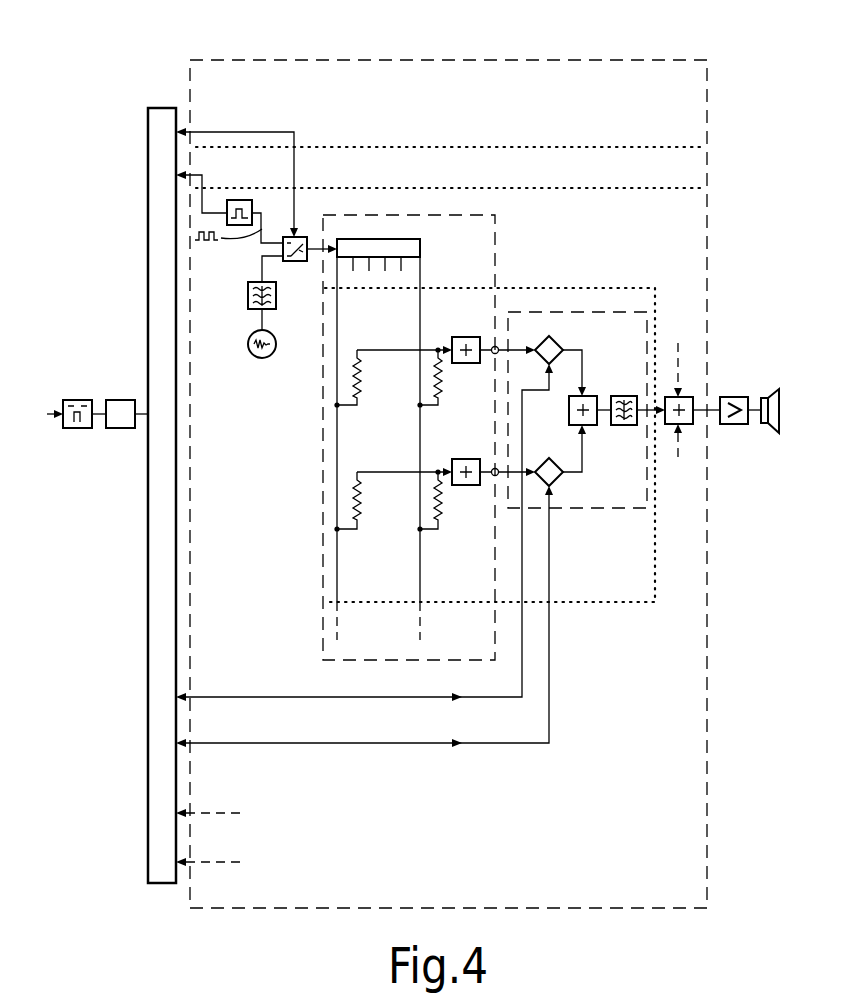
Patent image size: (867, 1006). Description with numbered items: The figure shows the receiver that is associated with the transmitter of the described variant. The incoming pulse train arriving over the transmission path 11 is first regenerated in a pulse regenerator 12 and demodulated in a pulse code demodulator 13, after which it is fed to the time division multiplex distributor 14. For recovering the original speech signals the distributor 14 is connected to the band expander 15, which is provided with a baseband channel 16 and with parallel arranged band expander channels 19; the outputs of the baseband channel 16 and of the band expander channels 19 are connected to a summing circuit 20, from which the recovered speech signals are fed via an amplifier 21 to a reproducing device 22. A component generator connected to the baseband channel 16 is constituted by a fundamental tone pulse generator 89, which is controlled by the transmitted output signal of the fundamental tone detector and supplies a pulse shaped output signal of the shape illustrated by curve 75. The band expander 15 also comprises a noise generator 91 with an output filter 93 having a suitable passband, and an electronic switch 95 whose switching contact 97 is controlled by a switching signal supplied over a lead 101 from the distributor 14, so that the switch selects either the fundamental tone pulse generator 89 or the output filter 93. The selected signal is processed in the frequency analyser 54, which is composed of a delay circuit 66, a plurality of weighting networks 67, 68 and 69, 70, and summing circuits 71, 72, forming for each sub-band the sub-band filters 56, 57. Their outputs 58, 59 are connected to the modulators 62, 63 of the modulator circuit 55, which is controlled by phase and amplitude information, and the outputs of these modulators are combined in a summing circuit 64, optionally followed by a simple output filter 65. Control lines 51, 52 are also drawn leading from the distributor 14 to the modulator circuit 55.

The transmission path 11 is at (58, 408).
The pulse regenerator 12 is at (80, 399).
The pulse code demodulator 13 is at (122, 399).
The time division multiplex distributor 14 is at (147, 122).
The band expander 15 is at (568, 57).
The baseband channel 16 is at (602, 175).
The band expander channels 19 is at (590, 287).
The summing circuit 20 is at (688, 395).
The amplifier 21 is at (732, 396).
The reproducing device 22 is at (770, 396).
The control line 51 is at (273, 696).
The control line 52 is at (273, 742).
The frequency analyser 54 is at (498, 238).
The modulator circuit 55 is at (628, 509).
The sub-band filter 56 is at (368, 454).
The sub-band filter 57 is at (368, 570).
The output 58 is at (493, 345).
The output 59 is at (493, 478).
The modulator 62 is at (561, 341).
The modulator 63 is at (562, 478).
The summing circuit 64 is at (591, 396).
The output filter 65 is at (626, 426).
The delay circuit 66 is at (421, 245).
The weighting network 67 is at (361, 383).
The weighting network 68 is at (443, 383).
The weighting network 69 is at (364, 505).
The weighting network 70 is at (444, 518).
The summing circuit 71 is at (452, 339).
The summing circuit 72 is at (460, 458).
The curve 75 is at (205, 244).
The fundamental tone pulse generator 89 is at (246, 200).
The noise generator 91 is at (249, 348).
The output filter 93 is at (248, 294).
The electronic switch 95 is at (284, 239).
The switching contact 97 is at (305, 237).
The lead 101 is at (280, 129).